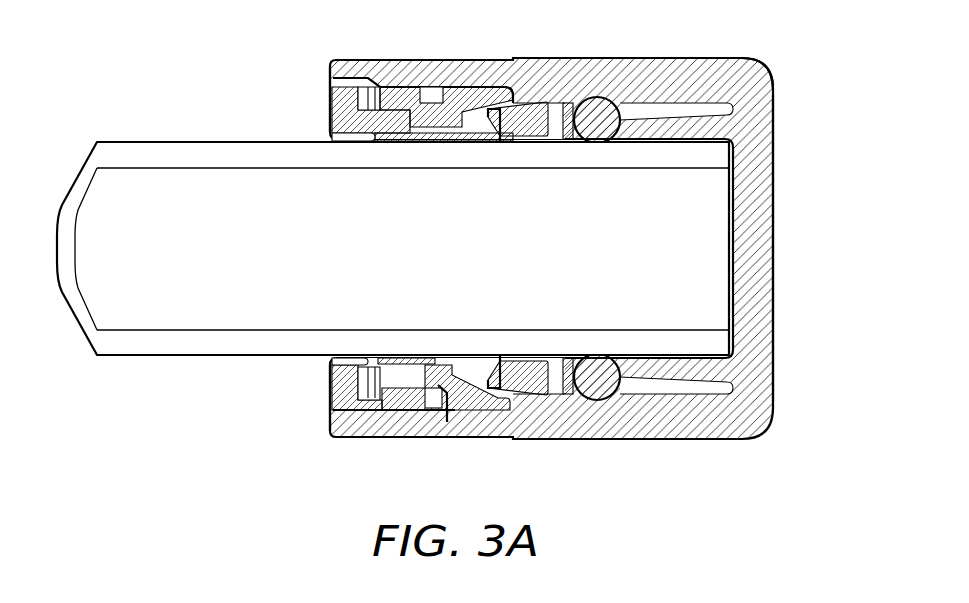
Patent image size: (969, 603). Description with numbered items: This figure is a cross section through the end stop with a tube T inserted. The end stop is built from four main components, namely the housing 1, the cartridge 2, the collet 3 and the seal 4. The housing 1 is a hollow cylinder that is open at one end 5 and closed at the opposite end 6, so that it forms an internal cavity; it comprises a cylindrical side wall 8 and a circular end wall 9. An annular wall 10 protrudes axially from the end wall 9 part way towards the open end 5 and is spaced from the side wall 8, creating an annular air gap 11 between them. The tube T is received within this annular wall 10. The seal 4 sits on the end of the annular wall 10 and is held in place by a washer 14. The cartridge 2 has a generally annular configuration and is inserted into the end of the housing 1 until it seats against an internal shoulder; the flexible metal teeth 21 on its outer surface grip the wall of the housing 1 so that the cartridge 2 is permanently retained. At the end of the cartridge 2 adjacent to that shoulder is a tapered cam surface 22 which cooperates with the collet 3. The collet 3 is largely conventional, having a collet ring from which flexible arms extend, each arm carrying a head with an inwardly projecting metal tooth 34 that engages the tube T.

The housing 1 is at (727, 58).
The cartridge 2 is at (485, 93).
The collet 3 is at (330, 383).
The seal 4 is at (600, 99).
The open end 5 is at (311, 64).
The closed end 6 is at (794, 64).
The cylindrical side wall 8 is at (712, 441).
The circular end wall 9 is at (774, 247).
The annular wall 10 is at (680, 355).
The annular air gap 11 is at (649, 390).
The washer 14 is at (569, 103).
The flexible metal teeth 21 is at (440, 112).
The tapered cam surface 22 is at (497, 401).
The metal tooth 34 is at (503, 143).
The tube T is at (205, 141).